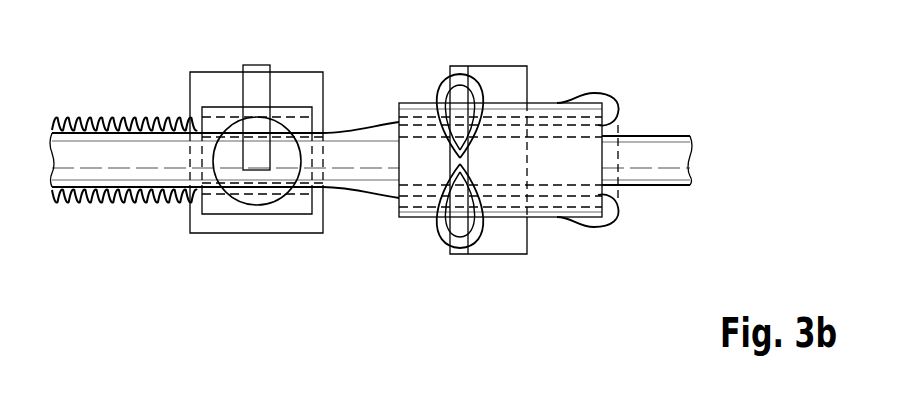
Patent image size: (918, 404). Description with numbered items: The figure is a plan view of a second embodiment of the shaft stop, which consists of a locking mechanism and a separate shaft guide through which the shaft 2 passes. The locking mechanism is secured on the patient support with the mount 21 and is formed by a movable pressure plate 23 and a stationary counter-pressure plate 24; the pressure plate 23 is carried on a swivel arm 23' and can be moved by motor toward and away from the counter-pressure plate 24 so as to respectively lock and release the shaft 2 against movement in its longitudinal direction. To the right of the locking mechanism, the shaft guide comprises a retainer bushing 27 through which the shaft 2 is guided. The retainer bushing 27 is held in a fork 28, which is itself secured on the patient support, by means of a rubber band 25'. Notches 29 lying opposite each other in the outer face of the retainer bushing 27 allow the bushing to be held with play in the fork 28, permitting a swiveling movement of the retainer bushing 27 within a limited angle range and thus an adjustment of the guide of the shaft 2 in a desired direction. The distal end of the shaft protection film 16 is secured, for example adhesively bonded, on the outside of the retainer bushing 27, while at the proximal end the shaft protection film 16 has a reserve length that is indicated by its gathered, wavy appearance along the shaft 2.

The shaft 2 is at (366, 175).
The shaft protection film 16 is at (117, 120).
The mount 21 is at (301, 222).
The movable pressure plate 23 is at (249, 116).
The swivel arm 23' is at (256, 91).
The stationary counter-pressure plate 24 is at (296, 115).
The rubber band 25' is at (450, 129).
The retainer bushing 27 is at (551, 108).
The fork 28 is at (460, 252).
The notches 29 is at (463, 108).